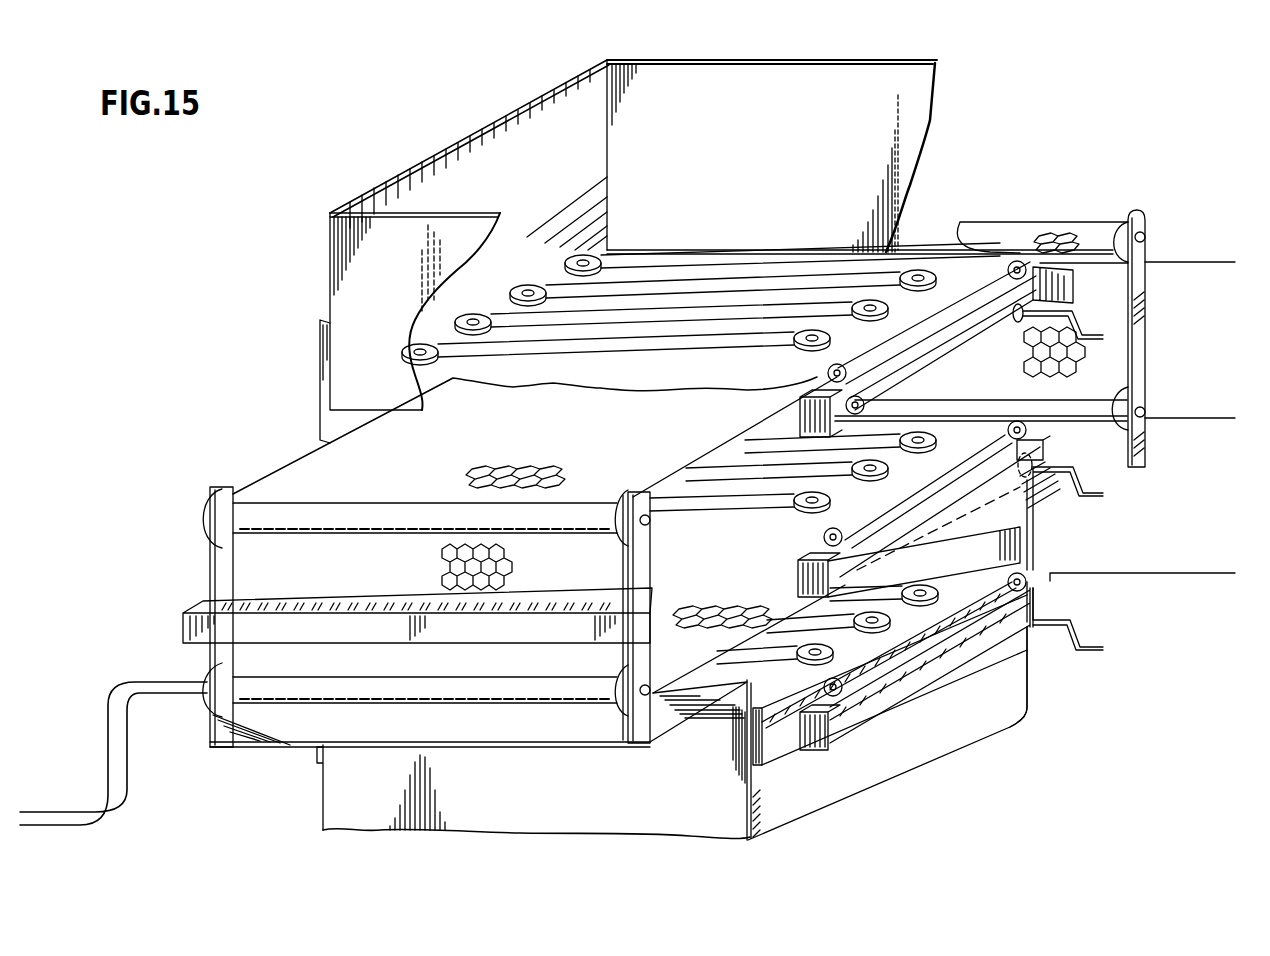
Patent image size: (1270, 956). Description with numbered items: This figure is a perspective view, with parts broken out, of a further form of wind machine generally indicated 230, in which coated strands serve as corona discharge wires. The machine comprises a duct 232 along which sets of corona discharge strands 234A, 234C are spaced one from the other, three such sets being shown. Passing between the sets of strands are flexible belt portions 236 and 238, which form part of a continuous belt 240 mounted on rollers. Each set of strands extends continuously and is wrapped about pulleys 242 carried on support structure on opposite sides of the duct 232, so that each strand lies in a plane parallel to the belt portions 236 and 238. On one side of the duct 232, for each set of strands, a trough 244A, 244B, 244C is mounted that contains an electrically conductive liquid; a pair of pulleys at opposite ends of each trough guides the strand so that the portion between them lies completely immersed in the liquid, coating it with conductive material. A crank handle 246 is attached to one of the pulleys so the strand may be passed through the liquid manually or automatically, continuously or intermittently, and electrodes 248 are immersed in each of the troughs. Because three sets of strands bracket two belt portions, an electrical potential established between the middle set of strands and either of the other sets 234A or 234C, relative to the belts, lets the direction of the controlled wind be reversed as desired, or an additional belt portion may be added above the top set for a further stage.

The wind machine embodiment 230 is at (1012, 721).
The duct 232 is at (905, 762).
The set of corona discharge strands 234A is at (880, 305).
The set of corona discharge strands 234C is at (938, 592).
The flexible belt portion 236 is at (746, 380).
The flexible belt portion 238 is at (765, 630).
The continuous belt 240 is at (660, 693).
The pulley 242 is at (578, 258).
The trough 244A is at (955, 363).
The trough 244B is at (930, 524).
The trough 244C is at (912, 697).
The crank handle 246 is at (1012, 314).
The electrode 248 is at (1180, 262).